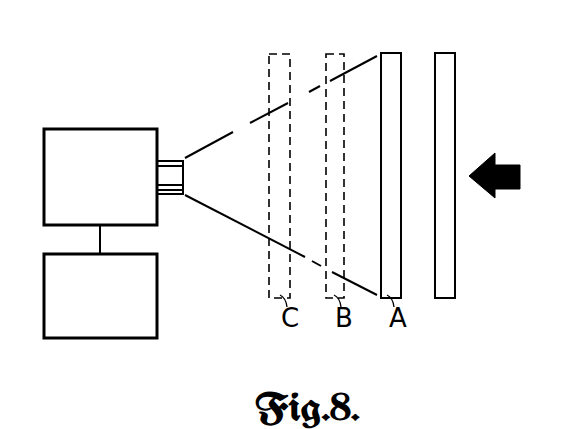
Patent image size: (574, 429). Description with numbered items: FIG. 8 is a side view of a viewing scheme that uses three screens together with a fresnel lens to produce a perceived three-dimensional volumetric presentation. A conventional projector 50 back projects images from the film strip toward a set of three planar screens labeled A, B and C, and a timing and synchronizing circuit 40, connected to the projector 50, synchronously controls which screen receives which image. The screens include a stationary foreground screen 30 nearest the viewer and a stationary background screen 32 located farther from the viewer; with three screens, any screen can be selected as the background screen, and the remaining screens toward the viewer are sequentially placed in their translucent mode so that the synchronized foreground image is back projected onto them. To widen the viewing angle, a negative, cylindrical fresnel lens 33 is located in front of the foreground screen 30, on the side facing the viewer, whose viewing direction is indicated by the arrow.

The projector 50 is at (100, 179).
The timing and synchronizing circuit 40 is at (100, 281).
The background screen 32 is at (282, 55).
The foreground screen 30 is at (397, 55).
The negative cylindrical fresnel lens 33 is at (452, 55).